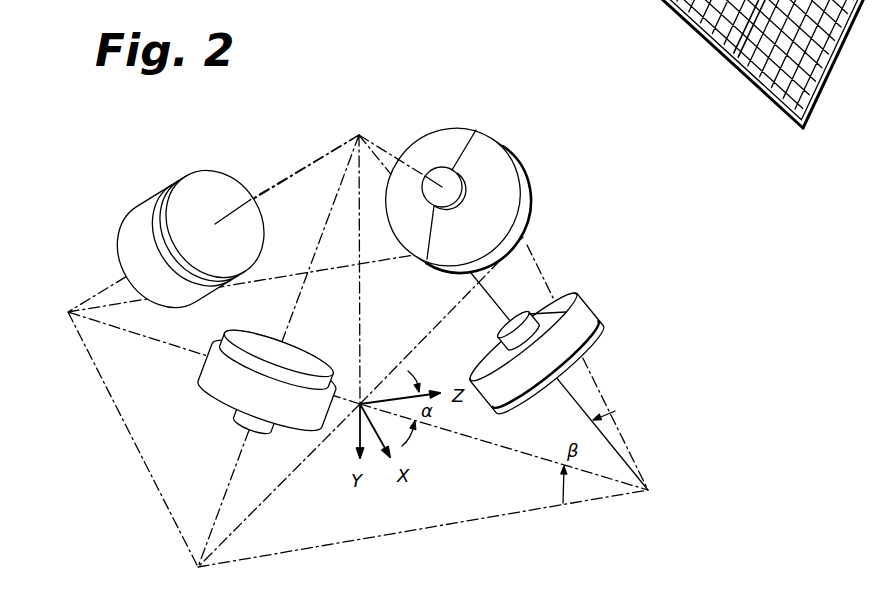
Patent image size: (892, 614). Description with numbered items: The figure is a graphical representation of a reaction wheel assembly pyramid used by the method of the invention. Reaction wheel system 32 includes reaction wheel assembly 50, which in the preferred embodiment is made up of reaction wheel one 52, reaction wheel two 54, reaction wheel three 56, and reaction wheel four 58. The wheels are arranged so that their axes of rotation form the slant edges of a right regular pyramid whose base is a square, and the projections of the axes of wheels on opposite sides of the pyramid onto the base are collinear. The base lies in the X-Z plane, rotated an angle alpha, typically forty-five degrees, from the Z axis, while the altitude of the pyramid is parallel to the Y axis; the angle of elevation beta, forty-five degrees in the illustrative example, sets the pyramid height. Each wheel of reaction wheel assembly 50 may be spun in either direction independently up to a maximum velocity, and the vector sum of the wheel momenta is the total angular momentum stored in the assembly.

The reaction wheel system 32 is at (672, 486).
The reaction wheel assembly 50 is at (427, 530).
The reaction wheel one (RW1) 52 is at (193, 361).
The reaction wheel two (RW2) 54 is at (532, 176).
The reaction wheel three (RW3) 56 is at (120, 207).
The reaction wheel four (RW4) 58 is at (607, 333).